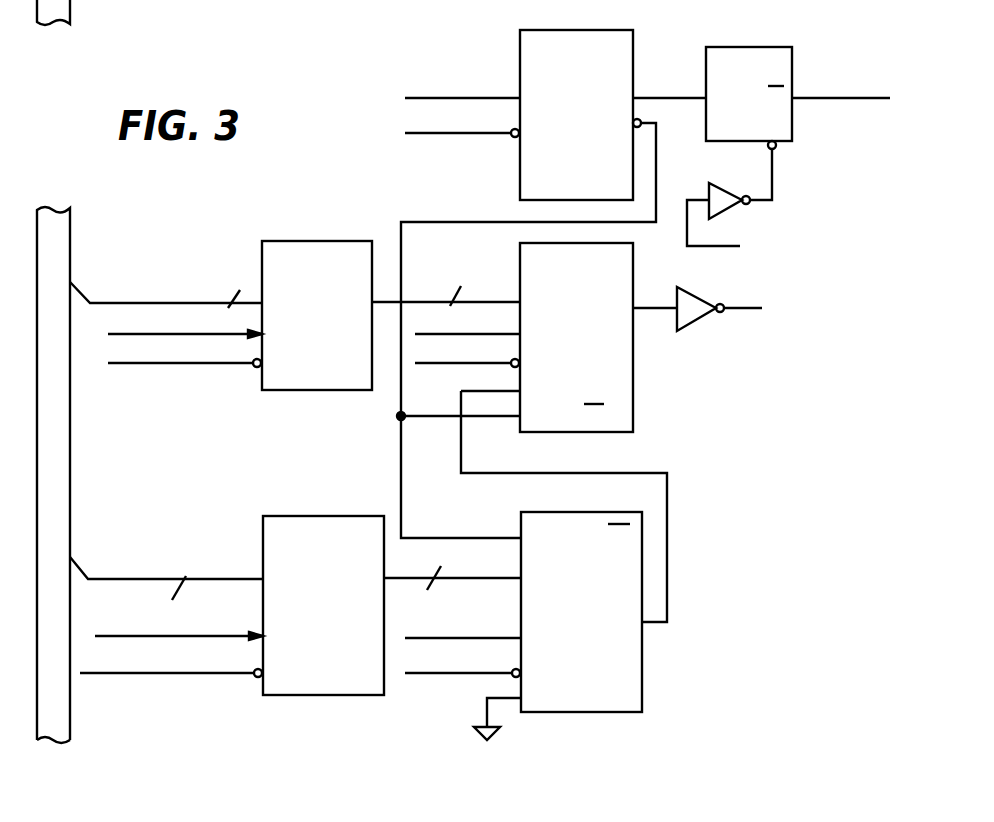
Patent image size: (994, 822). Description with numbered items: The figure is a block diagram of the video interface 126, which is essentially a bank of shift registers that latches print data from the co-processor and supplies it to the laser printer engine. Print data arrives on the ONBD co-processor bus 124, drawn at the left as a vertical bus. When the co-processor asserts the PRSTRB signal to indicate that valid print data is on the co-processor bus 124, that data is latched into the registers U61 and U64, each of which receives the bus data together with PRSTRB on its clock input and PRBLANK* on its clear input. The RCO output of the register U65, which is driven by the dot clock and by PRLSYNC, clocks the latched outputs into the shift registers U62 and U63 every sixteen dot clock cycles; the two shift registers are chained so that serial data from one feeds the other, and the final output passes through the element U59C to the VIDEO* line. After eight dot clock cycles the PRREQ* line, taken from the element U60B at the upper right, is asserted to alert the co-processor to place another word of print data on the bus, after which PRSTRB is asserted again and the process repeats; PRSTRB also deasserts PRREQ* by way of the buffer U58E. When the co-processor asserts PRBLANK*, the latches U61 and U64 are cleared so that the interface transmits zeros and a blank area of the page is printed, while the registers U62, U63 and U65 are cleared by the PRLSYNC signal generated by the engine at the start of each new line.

The co-processor bus 124 is at (72, 485).
The video interface 126 is at (250, 450).
The register U61 is at (320, 212).
The shift register U62 is at (633, 425).
The shift register U63 is at (642, 685).
The register U64 is at (350, 475).
The register U65 is at (517, 42).
The flip-flop U60B is at (728, 46).
The buffer U58E is at (750, 163).
The inverter U59C is at (688, 315).